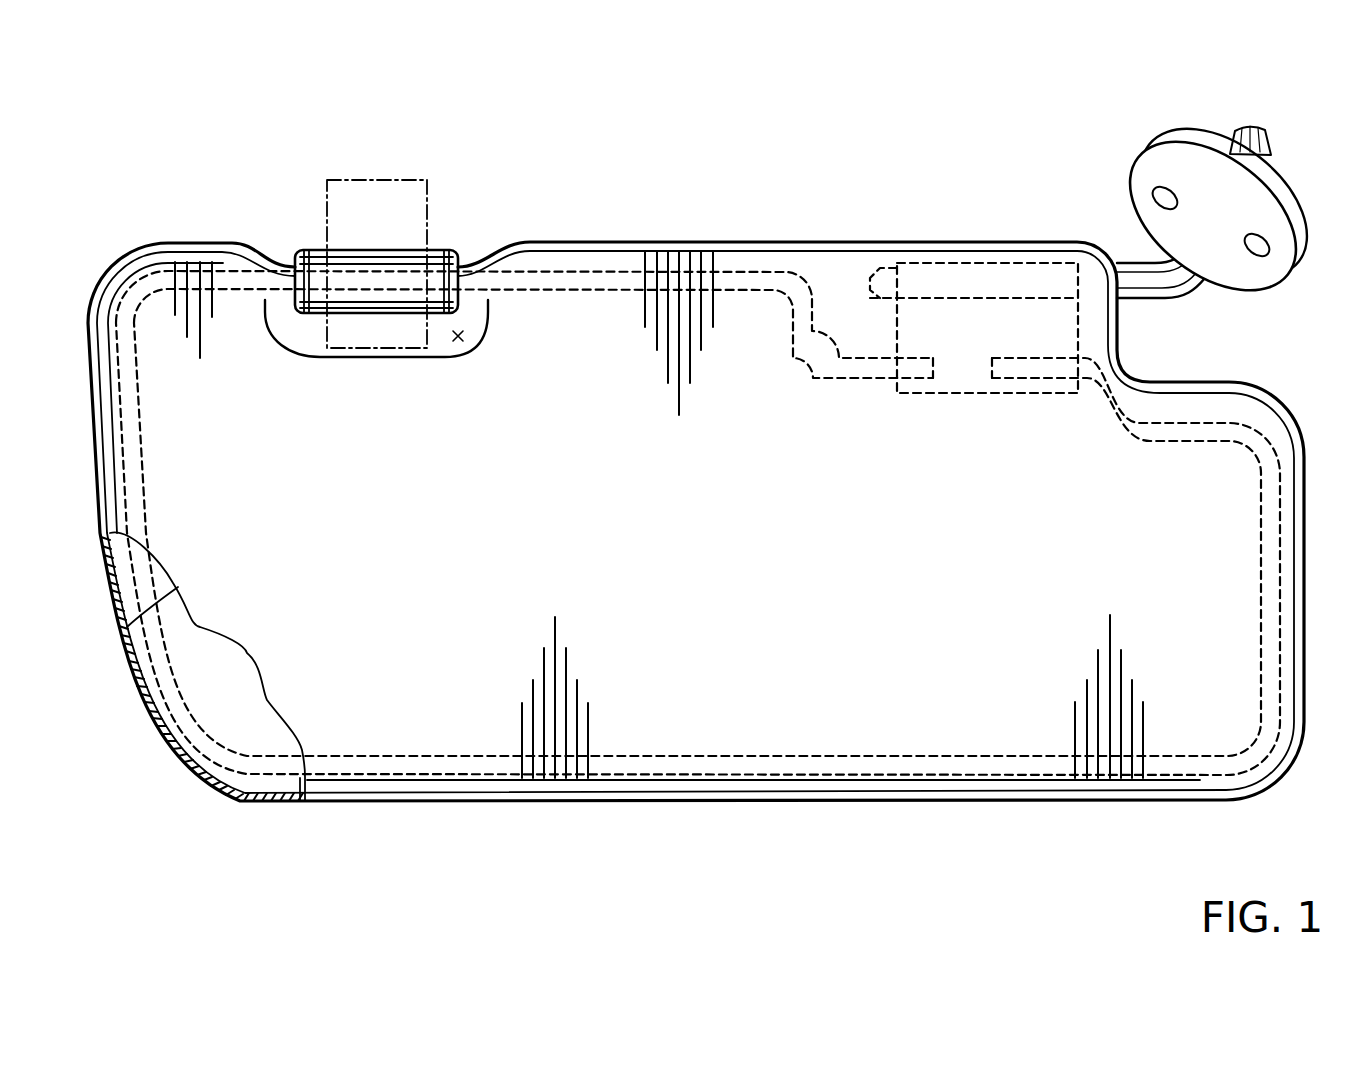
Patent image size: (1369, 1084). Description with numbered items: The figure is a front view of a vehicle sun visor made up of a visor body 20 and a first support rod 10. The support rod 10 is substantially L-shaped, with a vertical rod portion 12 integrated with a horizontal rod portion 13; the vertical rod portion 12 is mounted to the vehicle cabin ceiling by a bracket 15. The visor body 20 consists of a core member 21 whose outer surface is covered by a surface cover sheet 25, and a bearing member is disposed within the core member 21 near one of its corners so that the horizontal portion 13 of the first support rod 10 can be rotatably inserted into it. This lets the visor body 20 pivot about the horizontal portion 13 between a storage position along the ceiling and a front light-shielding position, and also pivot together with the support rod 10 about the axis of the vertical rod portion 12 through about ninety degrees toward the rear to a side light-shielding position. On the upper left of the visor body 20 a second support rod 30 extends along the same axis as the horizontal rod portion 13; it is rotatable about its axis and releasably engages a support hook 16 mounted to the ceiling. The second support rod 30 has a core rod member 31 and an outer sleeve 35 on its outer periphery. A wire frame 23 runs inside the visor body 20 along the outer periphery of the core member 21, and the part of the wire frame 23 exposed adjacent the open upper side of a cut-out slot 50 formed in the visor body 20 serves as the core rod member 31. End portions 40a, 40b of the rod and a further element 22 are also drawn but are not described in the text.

The first support rod 10 is at (1196, 285).
The vertical rod portion 12 is at (1228, 218).
The horizontal rod portion 13 is at (978, 282).
The bracket 15 is at (1172, 150).
The support hook 16 is at (340, 205).
The visor body 20 is at (707, 246).
The core member 21 is at (207, 707).
The wiring 22 is at (930, 262).
The wire frame 23 is at (593, 282).
The surface cover sheet 25 is at (125, 657).
The second support rod 30 is at (354, 303).
The core rod member 31 is at (385, 297).
The outer sleeve 35 is at (350, 300).
The clip left end 40a is at (308, 305).
The clip right end 40b is at (293, 258).
The cut-out slot 50 is at (463, 345).